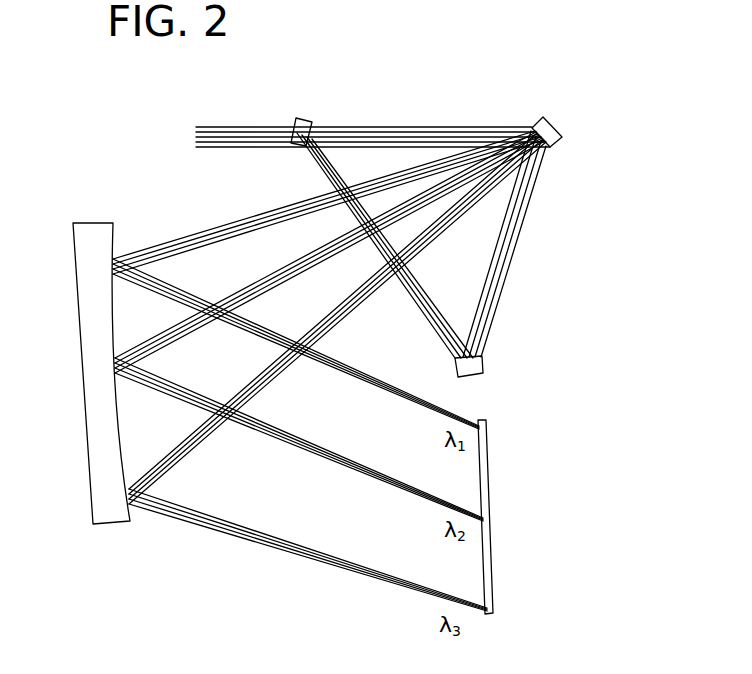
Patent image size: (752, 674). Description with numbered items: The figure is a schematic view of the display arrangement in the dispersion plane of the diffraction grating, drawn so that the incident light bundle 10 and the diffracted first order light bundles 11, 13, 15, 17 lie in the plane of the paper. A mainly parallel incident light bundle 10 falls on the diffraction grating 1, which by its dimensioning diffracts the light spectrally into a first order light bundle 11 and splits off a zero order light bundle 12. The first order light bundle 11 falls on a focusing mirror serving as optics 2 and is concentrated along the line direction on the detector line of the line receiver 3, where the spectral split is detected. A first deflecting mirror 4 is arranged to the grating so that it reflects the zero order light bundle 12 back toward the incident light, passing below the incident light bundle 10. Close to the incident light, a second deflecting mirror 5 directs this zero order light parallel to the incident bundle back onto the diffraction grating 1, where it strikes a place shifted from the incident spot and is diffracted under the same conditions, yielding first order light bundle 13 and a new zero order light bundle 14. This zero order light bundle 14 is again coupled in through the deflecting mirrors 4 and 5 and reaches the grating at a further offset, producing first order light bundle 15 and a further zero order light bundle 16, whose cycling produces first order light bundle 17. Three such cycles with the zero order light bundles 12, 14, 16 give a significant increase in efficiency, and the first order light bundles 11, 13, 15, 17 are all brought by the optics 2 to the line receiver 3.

The diffraction grating 1 is at (556, 129).
The focusing mirror 2 is at (80, 373).
The line receiver 3 is at (499, 517).
The first deflecting mirror 4 is at (480, 372).
The second deflecting mirror 5 is at (297, 119).
The incident light bundle 10 is at (357, 140).
The first order light bundle 11 is at (329, 371).
The zero order light bundle 12 is at (453, 244).
The first order light bundle 13 is at (329, 371).
The zero order light bundle 14 is at (453, 244).
The first order light bundle 15 is at (329, 371).
The zero order light bundle 16 is at (453, 244).
The first order light bundle 17 is at (329, 371).